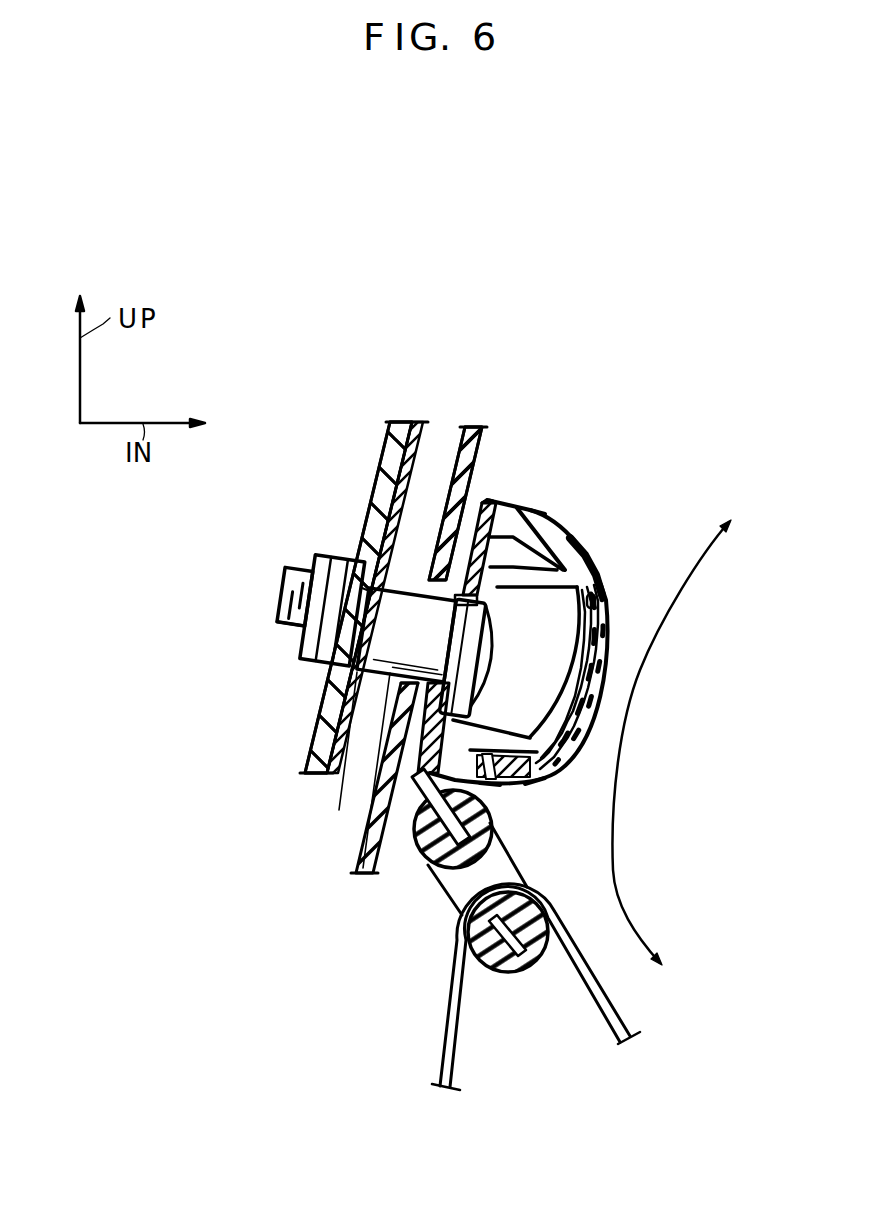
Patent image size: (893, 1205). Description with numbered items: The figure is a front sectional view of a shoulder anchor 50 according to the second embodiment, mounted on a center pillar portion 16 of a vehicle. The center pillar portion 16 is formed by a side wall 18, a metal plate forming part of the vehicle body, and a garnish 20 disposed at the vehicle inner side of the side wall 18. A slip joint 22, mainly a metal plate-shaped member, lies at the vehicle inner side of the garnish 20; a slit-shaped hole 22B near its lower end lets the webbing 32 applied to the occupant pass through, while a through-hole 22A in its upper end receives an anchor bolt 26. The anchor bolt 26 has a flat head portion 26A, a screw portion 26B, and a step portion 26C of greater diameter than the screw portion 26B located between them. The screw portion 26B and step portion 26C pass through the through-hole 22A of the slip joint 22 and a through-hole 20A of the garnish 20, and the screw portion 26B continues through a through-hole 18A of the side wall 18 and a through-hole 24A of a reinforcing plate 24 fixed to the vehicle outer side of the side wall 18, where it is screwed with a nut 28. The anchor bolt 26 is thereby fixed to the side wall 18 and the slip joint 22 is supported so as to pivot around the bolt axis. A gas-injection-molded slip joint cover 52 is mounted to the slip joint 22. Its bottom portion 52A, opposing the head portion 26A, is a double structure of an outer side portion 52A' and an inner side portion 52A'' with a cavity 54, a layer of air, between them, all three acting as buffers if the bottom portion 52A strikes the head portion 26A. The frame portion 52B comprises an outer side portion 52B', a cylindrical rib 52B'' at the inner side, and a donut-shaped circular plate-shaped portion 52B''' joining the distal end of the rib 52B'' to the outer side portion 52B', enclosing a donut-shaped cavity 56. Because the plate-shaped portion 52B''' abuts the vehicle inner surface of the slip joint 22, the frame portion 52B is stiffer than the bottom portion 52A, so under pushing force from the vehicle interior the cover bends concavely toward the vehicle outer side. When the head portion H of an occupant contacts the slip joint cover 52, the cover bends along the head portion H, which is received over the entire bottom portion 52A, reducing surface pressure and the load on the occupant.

The center pillar portion 16 is at (310, 258).
The side wall 18 is at (430, 437).
The through-hole 18A is at (305, 580).
The garnish 20 is at (453, 432).
The through-hole 20A is at (410, 686).
The slip joint 22 is at (478, 535).
The through-hole 22A is at (418, 700).
The slit-shaped hole 22B is at (462, 872).
The reinforcing plate 24 is at (380, 470).
The through-hole 24A is at (360, 588).
The anchor bolt 26 is at (524, 648).
The head portion 26A is at (490, 680).
The screw portion 26B is at (290, 634).
The step portion 26C is at (368, 672).
The nut 28 is at (318, 664).
The webbing 32 is at (450, 1038).
The shoulder anchor 50 is at (612, 288).
The slip joint cover 52 is at (594, 500).
The bottom portion 52A is at (627, 675).
The outer side portion 52A' is at (632, 677).
The inner side portion 52A'' is at (620, 698).
The frame portion 52B is at (533, 602).
The outer side portion 52B' is at (550, 450).
The cylindrical rib 52B'' is at (609, 811).
The donut-shaped circular plate-shaped portion 52B''' is at (534, 603).
The cavity 54 is at (592, 708).
The cavity 56 is at (551, 563).
The head portion H is at (653, 620).